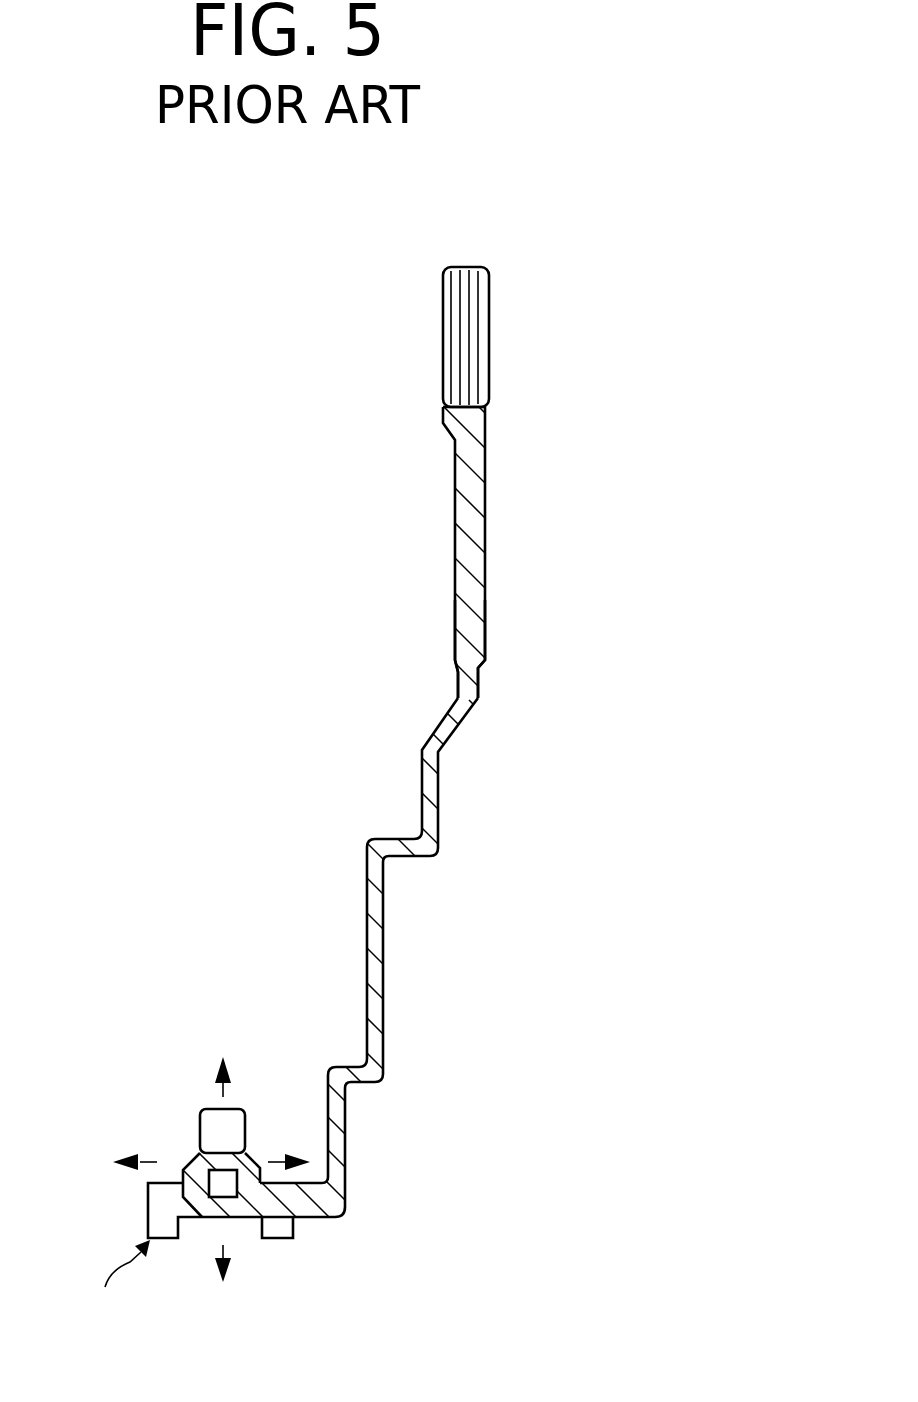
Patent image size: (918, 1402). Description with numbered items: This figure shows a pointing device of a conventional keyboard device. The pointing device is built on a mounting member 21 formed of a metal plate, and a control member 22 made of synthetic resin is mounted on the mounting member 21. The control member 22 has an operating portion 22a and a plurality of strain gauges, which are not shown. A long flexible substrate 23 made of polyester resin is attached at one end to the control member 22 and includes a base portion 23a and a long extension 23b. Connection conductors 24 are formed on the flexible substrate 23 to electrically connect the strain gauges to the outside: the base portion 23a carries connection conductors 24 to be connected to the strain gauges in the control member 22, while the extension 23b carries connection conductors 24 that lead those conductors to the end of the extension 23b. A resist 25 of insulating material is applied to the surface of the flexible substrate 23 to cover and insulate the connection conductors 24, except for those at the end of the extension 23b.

The mounting member 21 is at (155, 1203).
The control member 22 is at (178, 1143).
The operating portion 22a is at (217, 1187).
The flexible substrate 23 is at (446, 802).
The base portion 23a is at (256, 1165).
The extension 23b is at (480, 637).
The connection conductors 24 is at (489, 351).
The resist 25 is at (485, 538).